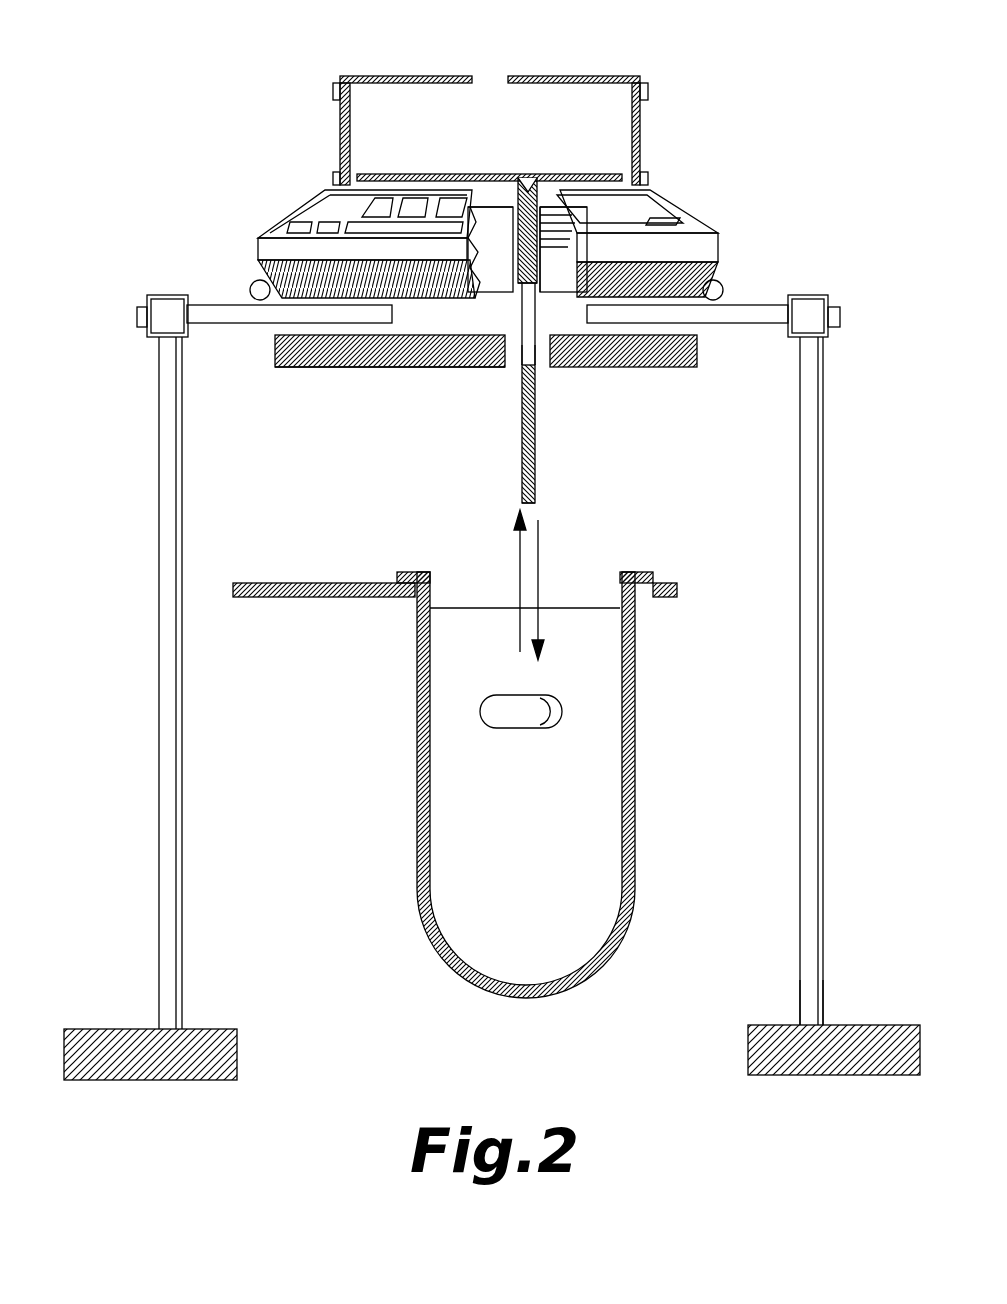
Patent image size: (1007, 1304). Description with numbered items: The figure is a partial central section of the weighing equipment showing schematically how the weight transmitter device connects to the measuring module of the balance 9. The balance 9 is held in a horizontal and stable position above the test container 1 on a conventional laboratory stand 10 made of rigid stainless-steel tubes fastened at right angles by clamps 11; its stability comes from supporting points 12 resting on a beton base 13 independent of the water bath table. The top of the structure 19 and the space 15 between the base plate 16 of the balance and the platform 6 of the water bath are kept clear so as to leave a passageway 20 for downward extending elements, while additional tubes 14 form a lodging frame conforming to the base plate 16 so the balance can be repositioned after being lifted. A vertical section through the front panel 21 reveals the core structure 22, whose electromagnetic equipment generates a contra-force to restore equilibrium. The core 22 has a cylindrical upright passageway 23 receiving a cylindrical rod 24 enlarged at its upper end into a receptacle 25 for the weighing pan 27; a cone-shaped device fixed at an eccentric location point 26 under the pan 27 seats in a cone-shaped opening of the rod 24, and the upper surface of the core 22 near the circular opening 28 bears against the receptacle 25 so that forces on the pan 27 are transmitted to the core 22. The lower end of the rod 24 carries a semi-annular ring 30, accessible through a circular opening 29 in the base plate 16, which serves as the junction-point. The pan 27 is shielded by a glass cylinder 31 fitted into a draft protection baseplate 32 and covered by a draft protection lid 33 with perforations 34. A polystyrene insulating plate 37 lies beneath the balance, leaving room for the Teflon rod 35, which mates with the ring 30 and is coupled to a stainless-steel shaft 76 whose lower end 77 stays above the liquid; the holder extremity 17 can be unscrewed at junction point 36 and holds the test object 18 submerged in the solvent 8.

The test container 1 is at (418, 880).
The platform 6 is at (270, 583).
The solvent 8 is at (525, 750).
The balance 9 is at (718, 230).
The laboratory stand 10 is at (822, 615).
The clamps 11 is at (830, 337).
The supporting points 12 is at (827, 1025).
The beton base 13 is at (872, 1025).
The additional tubes 14 is at (722, 290).
The space 15 is at (296, 485).
The base plate 16 is at (680, 292).
The holder extremity 17 is at (538, 583).
The test object 18 is at (540, 718).
The top of the structure 19 is at (243, 324).
The passageway 20 is at (407, 357).
The front panel 21 is at (330, 207).
The core structure 22 is at (543, 203).
The cylindrical upright passageway 23 is at (537, 248).
The cylindrical rod 24 is at (518, 260).
The receptacle 25 is at (553, 207).
The eccentric location point 26 is at (526, 180).
The weighing pan 27 is at (376, 172).
The circular opening 28 is at (512, 207).
The circular opening 29 is at (543, 302).
The semi-annular ring 30 is at (520, 300).
The glass cylinder 31 is at (640, 110).
The draft protection baseplate 32 is at (648, 180).
The draft protection lid 33 is at (362, 77).
The perforations 34 is at (487, 77).
The cylindrical solid rod 35 is at (518, 350).
The junction point 36 is at (537, 370).
The polystyrene insulating plate 37 is at (332, 368).
The stainless-steel shaft 76 is at (520, 460).
The lower end 77 is at (520, 505).